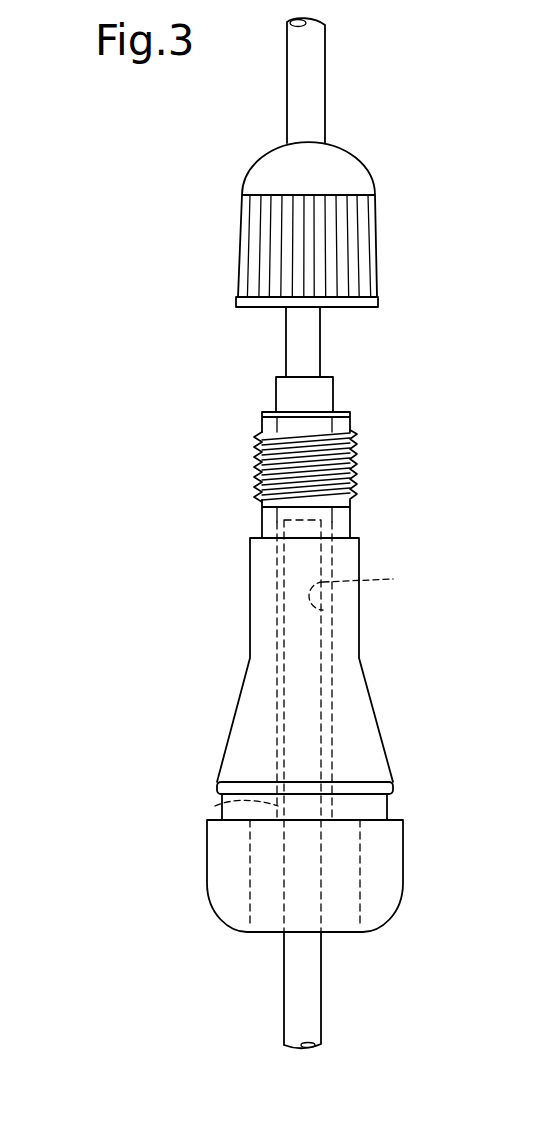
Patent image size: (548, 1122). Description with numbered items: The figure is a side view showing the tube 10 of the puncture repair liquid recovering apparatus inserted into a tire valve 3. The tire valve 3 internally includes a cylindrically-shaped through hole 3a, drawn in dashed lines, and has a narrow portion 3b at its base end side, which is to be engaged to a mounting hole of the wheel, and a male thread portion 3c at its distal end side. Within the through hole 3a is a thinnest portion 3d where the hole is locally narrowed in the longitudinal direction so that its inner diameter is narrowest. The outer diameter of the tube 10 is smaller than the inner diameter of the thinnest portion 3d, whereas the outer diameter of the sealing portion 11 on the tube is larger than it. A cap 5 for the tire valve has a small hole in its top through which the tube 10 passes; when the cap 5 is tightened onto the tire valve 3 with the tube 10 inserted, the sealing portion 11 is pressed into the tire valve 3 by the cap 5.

The tube 10 is at (317, 78).
The cap 5 is at (365, 250).
The sealing portion 11 is at (322, 397).
The male thread portion 3c is at (355, 457).
The tire valve 3 is at (391, 733).
The through hole 3a is at (393, 579).
The narrow portion 3b is at (388, 805).
The thinnest portion 3d is at (215, 806).